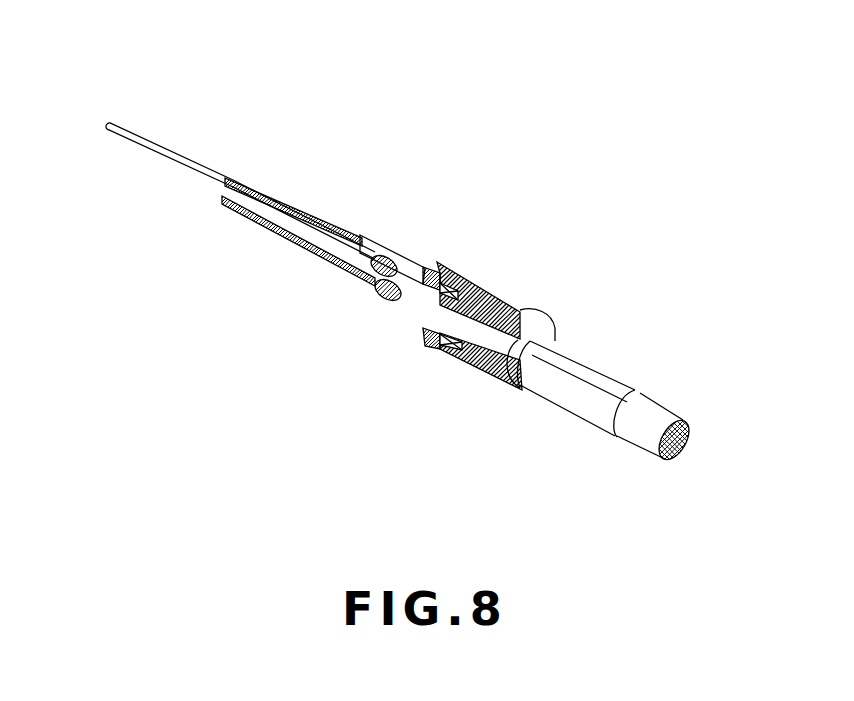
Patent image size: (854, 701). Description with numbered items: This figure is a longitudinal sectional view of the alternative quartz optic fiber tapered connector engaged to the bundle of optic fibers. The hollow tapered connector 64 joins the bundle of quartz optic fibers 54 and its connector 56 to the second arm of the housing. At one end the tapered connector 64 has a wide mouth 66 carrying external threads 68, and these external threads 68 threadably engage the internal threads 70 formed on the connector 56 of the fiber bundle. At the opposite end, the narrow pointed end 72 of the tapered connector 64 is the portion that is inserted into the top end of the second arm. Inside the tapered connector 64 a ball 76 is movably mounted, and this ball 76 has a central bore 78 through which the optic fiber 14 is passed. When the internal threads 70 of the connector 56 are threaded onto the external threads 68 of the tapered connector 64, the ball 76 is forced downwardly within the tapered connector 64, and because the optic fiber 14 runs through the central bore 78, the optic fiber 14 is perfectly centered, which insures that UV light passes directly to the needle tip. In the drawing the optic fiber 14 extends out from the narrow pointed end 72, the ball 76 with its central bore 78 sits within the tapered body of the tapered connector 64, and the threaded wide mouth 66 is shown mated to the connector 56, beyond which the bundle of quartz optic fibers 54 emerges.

The optic fiber 14 is at (156, 144).
The narrow pointed end 72 is at (223, 177).
The tapered connector 64 is at (331, 217).
The ball 76 is at (353, 275).
The central bore 78 is at (389, 295).
The wide mouth 66 is at (431, 262).
The external threads 68 is at (435, 336).
The internal threads 70 is at (438, 341).
The connector 56 is at (520, 291).
The bundle of quartz optic fibers 54 is at (663, 412).